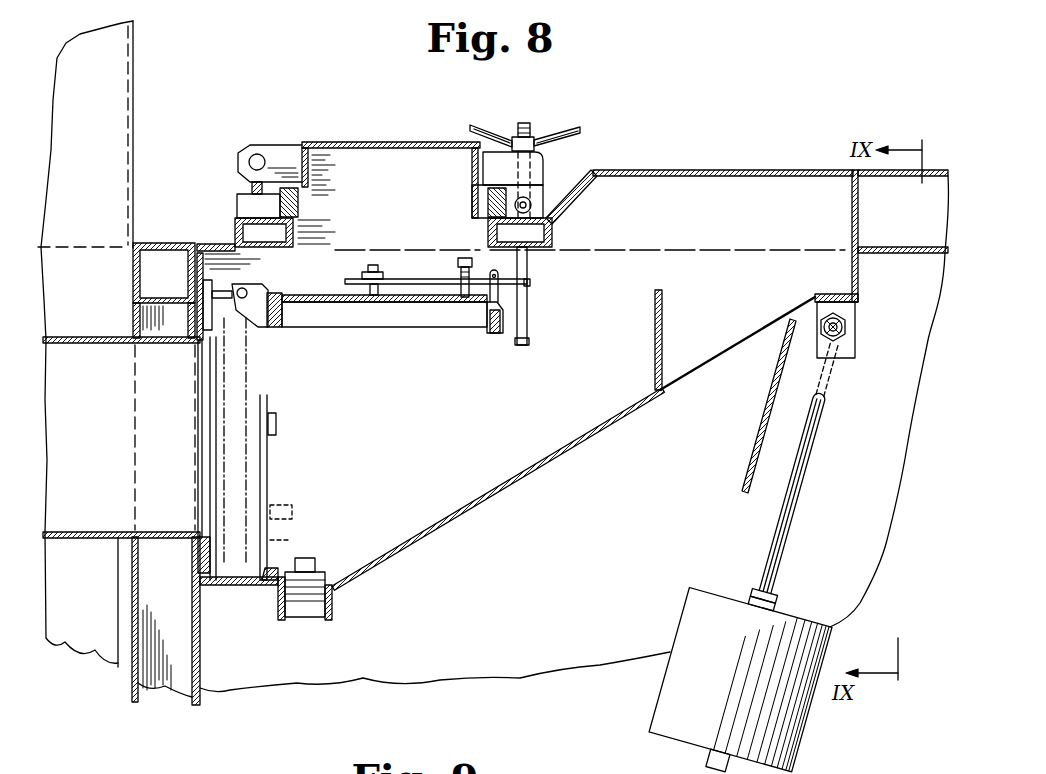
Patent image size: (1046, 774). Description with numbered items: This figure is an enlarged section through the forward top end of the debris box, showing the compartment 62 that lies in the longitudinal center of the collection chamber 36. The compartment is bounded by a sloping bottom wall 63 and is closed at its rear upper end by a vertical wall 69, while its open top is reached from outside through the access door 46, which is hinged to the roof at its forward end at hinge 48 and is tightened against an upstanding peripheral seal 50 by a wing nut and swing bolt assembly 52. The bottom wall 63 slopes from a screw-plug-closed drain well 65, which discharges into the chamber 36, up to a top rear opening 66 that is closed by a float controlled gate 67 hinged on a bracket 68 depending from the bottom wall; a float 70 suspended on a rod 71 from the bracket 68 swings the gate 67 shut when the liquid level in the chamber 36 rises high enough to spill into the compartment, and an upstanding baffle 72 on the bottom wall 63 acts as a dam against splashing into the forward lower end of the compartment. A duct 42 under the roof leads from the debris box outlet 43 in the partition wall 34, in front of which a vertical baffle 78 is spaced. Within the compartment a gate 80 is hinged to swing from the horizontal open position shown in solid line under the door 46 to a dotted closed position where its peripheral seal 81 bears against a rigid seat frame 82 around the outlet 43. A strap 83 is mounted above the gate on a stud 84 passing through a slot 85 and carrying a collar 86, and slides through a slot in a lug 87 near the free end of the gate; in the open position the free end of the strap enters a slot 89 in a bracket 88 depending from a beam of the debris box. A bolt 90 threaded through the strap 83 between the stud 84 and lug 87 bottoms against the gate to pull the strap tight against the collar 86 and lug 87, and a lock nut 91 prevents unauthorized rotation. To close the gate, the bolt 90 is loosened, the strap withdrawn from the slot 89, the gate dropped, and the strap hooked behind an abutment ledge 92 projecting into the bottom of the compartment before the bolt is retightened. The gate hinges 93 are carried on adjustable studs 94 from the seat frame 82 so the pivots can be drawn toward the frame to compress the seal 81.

The partition wall 34 is at (199, 650).
The debris chamber 36 is at (618, 575).
The duct 42 is at (90, 539).
The debris box outlet 43 is at (197, 363).
The access door 46 is at (386, 140).
The hinge 48 is at (258, 153).
The peripheral seal 50 is at (310, 187).
The wing nut and swing bolt assembly 52 is at (583, 130).
The compartment 62 is at (417, 438).
The sloping bottom wall 63 is at (543, 455).
The drain well 65 is at (332, 617).
The top rear opening 66 is at (720, 352).
The float controlled gate 67 is at (764, 422).
The bracket 68 is at (856, 352).
The vertical wall 69 is at (852, 198).
The float 70 is at (794, 625).
The rod 71 is at (792, 494).
The baffle 72 is at (655, 300).
The vertical baffle 78 is at (148, 688).
The gate 80 is at (313, 303).
The peripheral seal 81 is at (217, 393).
The seat frame 82 is at (192, 343).
The strap 83 is at (433, 278).
The stud 84 is at (352, 291).
The slot 85 is at (397, 279).
The collar 86 is at (371, 265).
The lug 87 is at (489, 294).
The bracket 88 is at (530, 323).
The slot 89 is at (528, 283).
The bolt 90 is at (452, 292).
The lock nut 91 is at (476, 268).
The abutment ledge 92 is at (272, 572).
The gate hinge 93 is at (242, 288).
The adjustable stud 94 is at (226, 281).